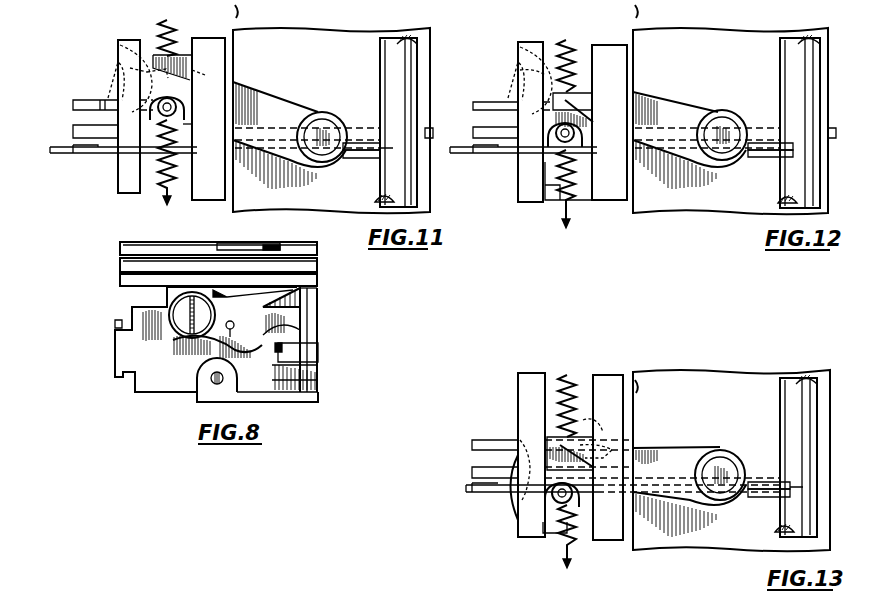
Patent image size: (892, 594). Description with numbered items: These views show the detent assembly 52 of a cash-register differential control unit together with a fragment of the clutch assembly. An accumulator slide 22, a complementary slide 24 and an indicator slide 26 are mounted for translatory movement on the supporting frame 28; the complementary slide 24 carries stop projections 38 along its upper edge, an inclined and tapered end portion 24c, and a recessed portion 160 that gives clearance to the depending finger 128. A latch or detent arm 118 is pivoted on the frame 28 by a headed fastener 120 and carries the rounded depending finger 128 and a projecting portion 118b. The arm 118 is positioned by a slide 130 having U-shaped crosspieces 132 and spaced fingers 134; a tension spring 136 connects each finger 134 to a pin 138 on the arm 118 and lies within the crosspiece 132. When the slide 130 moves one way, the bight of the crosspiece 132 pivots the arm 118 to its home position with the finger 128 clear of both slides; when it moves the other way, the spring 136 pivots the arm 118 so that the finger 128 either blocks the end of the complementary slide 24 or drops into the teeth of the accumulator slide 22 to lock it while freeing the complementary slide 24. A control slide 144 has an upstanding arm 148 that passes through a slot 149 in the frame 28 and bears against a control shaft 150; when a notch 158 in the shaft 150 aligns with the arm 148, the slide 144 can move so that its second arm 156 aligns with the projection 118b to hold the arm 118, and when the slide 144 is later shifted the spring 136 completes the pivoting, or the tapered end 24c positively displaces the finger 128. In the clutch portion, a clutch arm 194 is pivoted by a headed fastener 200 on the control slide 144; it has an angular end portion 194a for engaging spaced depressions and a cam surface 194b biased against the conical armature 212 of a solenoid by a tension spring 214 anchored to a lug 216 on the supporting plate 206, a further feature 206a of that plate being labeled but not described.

In FIG. 11, the accumulator slide 22 is at (76, 128).
In FIG. 12, the accumulator slide 22 is at (478, 130).
In FIG. 13, the accumulator slide 22 is at (476, 468).
In FIG. 8, the accumulator slide 22 is at (120, 280).
In FIG. 11, the complementary slide 24 is at (76, 102).
In FIG. 12, the complementary slide 24 is at (478, 104).
In FIG. 13, the complementary slide 24 is at (476, 440).
In FIG. 8, the complementary slide 24 is at (120, 248).
In FIG. 11, the end portion 24c is at (130, 68).
In FIG. 12, the end portion 24c is at (520, 70).
In FIG. 13, the end portion 24c is at (596, 452).
In FIG. 8, the indicator slide 26 is at (120, 265).
In FIG. 11, the supporting frame 28 is at (257, 33).
In FIG. 12, the supporting frame 28 is at (657, 35).
In FIG. 13, the supporting frame 28 is at (675, 374).
In FIG. 8, the stop projections 38 is at (234, 250).
In FIG. 11, the detent assembly 52 is at (330, 8).
In FIG. 12, the detent assembly 52 is at (748, 6).
In FIG. 13, the detent assembly 52 is at (718, 333).
In FIG. 11, the latch arm 118 is at (276, 108).
In FIG. 12, the latch arm 118 is at (672, 108).
In FIG. 13, the latch arm 118 is at (672, 466).
In FIG. 12, the projecting portion 118b is at (544, 186).
In FIG. 13, the projecting portion 118b is at (510, 505).
In FIG. 11, the headed fastener 120 is at (316, 125).
In FIG. 12, the headed fastener 120 is at (718, 123).
In FIG. 13, the headed fastener 120 is at (718, 463).
In FIG. 11, the depending finger 128 is at (121, 50).
In FIG. 12, the depending finger 128 is at (521, 48).
In FIG. 13, the depending finger 128 is at (518, 440).
In FIG. 11, the slide 130 is at (132, 40).
In FIG. 12, the slide 130 is at (538, 42).
In FIG. 13, the slide 130 is at (525, 372).
In FIG. 11, the U-shaped crosspiece 132 is at (187, 132).
In FIG. 12, the U-shaped crosspiece 132 is at (590, 165).
In FIG. 13, the U-shaped crosspiece 132 is at (580, 518).
In FIG. 11, the finger 134 is at (180, 54).
In FIG. 12, the finger 134 is at (582, 93).
In FIG. 13, the finger 134 is at (548, 440).
In FIG. 11, the tension spring 136 is at (164, 193).
In FIG. 12, the tension spring 136 is at (563, 203).
In FIG. 13, the tension spring 136 is at (560, 548).
In FIG. 11, the pin 138 is at (179, 107).
In FIG. 12, the pin 138 is at (578, 125).
In FIG. 13, the pin 138 is at (552, 508).
In FIG. 11, the control slide 144 is at (51, 155).
In FIG. 12, the control slide 144 is at (451, 155).
In FIG. 13, the control slide 144 is at (468, 488).
In FIG. 8, the control slide 144 is at (327, 282).
In FIG. 11, the upstanding arm 148 is at (368, 160).
In FIG. 12, the upstanding arm 148 is at (773, 159).
In FIG. 13, the upstanding arm 148 is at (768, 481).
In FIG. 11, the slot 149 is at (358, 142).
In FIG. 12, the slot 149 is at (766, 142).
In FIG. 13, the slot 149 is at (768, 498).
In FIG. 11, the control shaft 150 is at (396, 38).
In FIG. 12, the control shaft 150 is at (796, 38).
In FIG. 13, the control shaft 150 is at (793, 378).
In FIG. 11, the second upstanding arm 156 is at (85, 154).
In FIG. 12, the second upstanding arm 156 is at (485, 154).
In FIG. 13, the second upstanding arm 156 is at (490, 495).
In FIG. 11, the notch 158 is at (377, 203).
In FIG. 12, the notch 158 is at (780, 204).
In FIG. 13, the notch 158 is at (778, 534).
In FIG. 11, the recessed portion 160 is at (110, 93).
In FIG. 12, the recessed portion 160 is at (512, 93).
In FIG. 13, the recessed portion 160 is at (592, 432).
In FIG. 8, the clutch arm 194 is at (300, 326).
In FIG. 8, the end portion 194a is at (303, 300).
In FIG. 8, the cam surface 194b is at (300, 345).
In FIG. 8, the headed fastener 200 is at (160, 341).
In FIG. 8, the supporting plate 206 is at (172, 320).
In FIG. 8, the roller stop 206a is at (118, 328).
In FIG. 8, the armature 212 is at (273, 360).
In FIG. 8, the tension spring 214 is at (210, 348).
In FIG. 8, the lug 216 is at (198, 379).